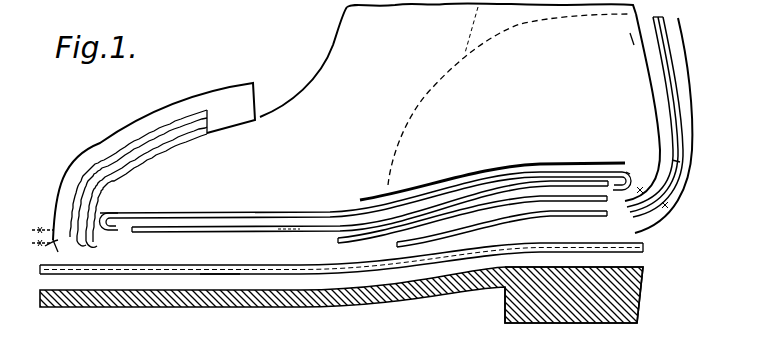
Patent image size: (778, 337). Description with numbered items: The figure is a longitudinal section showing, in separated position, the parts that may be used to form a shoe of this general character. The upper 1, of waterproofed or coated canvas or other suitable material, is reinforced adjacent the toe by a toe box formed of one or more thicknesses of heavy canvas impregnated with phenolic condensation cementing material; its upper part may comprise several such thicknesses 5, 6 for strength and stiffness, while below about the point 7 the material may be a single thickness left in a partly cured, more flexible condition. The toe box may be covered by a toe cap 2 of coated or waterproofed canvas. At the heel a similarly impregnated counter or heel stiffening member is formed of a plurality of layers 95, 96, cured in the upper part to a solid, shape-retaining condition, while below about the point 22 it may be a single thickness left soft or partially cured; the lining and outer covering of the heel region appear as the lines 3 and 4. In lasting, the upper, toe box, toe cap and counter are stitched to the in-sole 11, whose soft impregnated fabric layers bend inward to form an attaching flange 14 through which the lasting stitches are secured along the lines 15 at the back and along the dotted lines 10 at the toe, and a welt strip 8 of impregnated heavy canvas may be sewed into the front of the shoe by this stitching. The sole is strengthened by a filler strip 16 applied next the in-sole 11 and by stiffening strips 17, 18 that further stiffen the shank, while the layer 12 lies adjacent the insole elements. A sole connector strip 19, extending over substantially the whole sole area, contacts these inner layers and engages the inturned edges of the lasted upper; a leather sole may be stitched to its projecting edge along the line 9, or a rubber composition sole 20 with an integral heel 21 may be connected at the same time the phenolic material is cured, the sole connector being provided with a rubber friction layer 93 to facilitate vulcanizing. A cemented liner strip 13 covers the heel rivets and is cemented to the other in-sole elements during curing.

The upper 1 is at (338, 33).
The toe cap 2 is at (86, 150).
The heel quarter lining 3 is at (647, 60).
The heel outer layer 4 is at (689, 60).
The thickness of impregnated canvas 5 is at (128, 146).
The thickness of impregnated canvas 6 is at (175, 140).
The point 7 is at (92, 217).
The welt strip 8 is at (36, 229).
The line 9 is at (45, 246).
The dotted lines 10 is at (83, 238).
The in-sole 11 is at (255, 226).
The insole top layer 12 is at (161, 196).
The liner strip 13 is at (611, 163).
The attaching flange 14 is at (626, 172).
The lines 15 is at (665, 205).
The filler strip 16 is at (288, 228).
The stiffening strip 17 is at (472, 208).
The stiffening strip 18 is at (528, 218).
The sole connector strip 19 is at (253, 265).
The rubber composition sole 20 is at (159, 300).
The heel 21 is at (644, 297).
The point 22 is at (677, 158).
The rubber coating or friction layer 93 is at (221, 276).
The layer of phenolic impregnated canvas 95 is at (677, 82).
The layer of phenolic impregnated canvas 96 is at (678, 100).